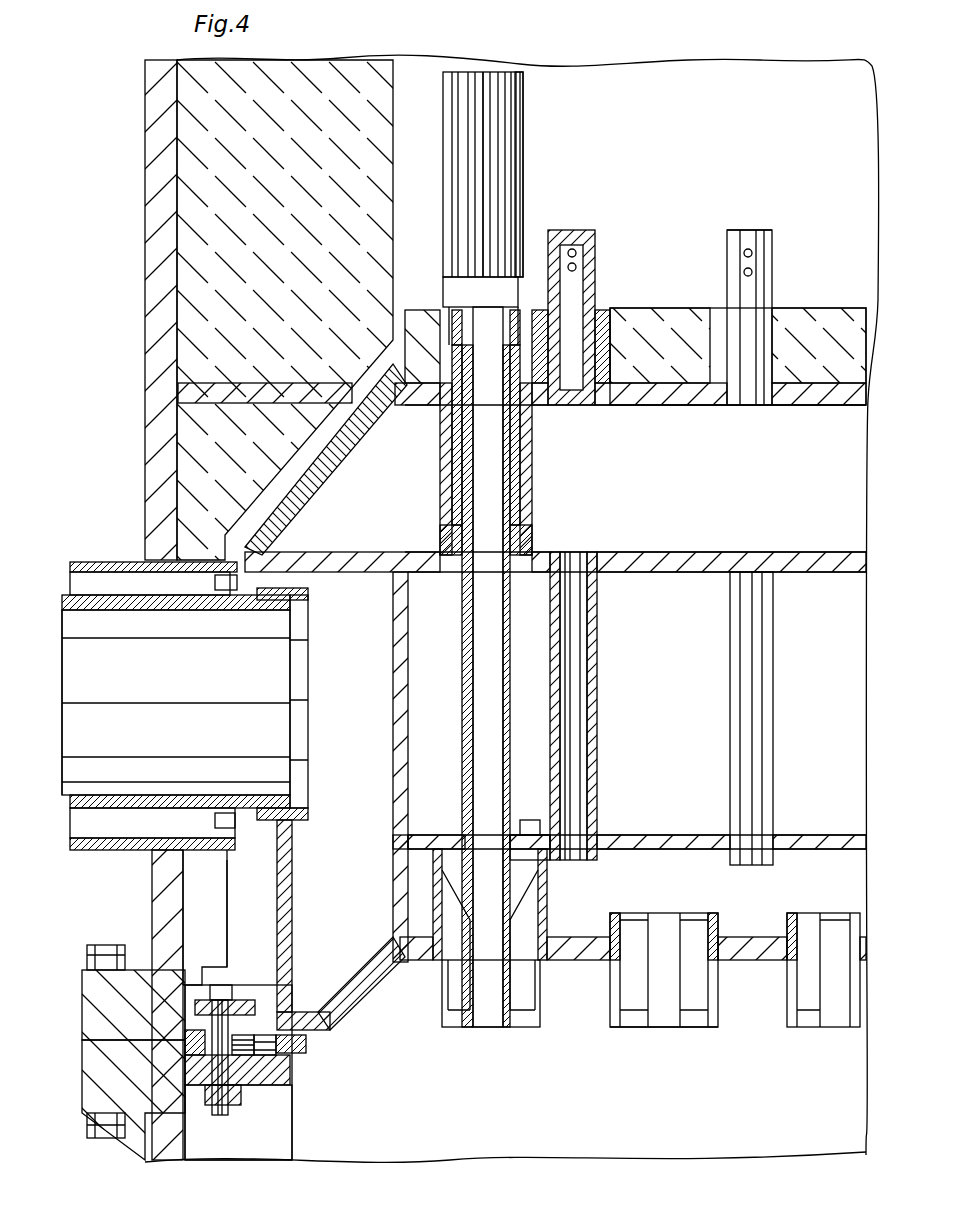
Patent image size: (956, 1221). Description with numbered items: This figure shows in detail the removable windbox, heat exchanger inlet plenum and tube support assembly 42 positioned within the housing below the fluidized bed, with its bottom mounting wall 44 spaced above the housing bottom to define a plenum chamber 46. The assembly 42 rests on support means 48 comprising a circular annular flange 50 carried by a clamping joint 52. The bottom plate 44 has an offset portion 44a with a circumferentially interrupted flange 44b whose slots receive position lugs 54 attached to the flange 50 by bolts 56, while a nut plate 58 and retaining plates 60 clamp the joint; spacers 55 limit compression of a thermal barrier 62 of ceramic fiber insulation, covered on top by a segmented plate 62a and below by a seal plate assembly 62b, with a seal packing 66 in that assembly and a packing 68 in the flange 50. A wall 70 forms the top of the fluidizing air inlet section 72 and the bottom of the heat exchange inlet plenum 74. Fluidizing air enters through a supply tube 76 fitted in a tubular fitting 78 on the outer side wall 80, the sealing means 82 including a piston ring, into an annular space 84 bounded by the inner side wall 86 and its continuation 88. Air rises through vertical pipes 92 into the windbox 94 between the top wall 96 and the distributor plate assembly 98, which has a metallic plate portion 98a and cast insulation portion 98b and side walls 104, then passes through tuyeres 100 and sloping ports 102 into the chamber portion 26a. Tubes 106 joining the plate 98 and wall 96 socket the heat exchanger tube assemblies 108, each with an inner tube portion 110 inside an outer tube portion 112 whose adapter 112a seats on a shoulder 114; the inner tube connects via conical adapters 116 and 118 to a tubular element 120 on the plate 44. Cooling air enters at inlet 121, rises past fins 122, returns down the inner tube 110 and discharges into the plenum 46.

The chamber portion 26a is at (746, 178).
The removable windbox, heat exchanger inlet plenum and heat exchanger tube support a 42 is at (270, 486).
The bottom mounting wall 44 is at (585, 958).
The offset portion 44a is at (368, 998).
The flange 44b is at (318, 1012).
The plenum chamber 46 is at (710, 1089).
The support means 48 is at (325, 900).
The circular annular flange 50 is at (223, 1120).
The clamping joint 52 is at (150, 1105).
The position lugs 54 is at (190, 1025).
The spacers 55 is at (200, 1042).
The fit screws or bolts 56 is at (232, 1000).
The nut plate 58 is at (226, 1105).
The retaining plates 60 is at (248, 1000).
The thermal barrier 62 is at (282, 1062).
The segmented plate 62a is at (300, 1043).
The seal plate assembly 62b is at (265, 1068).
The seal packing 66 is at (306, 1040).
The packing 68 is at (290, 1105).
The wall 70 is at (678, 845).
The fluidizing air inlet section 72 is at (700, 884).
The heat exchange inlet plenum 74 is at (668, 687).
The fluidizing air supply tube 76 is at (118, 605).
The tubular fitting 78 is at (300, 665).
The outer side wall 80 is at (290, 860).
The sealing means 82 is at (285, 630).
The annular space 84 is at (354, 730).
The inner side wall 86 is at (402, 712).
The continuation 88 is at (404, 848).
The vertical pipes or tubes 92 is at (737, 630).
The windbox 94 is at (716, 472).
The top wall 96 is at (740, 560).
The distributor plate assembly 98 is at (838, 390).
The bottom metallic plate portion 98a is at (652, 402).
The cast insulation portion 98b is at (848, 316).
The tuyeres or nozzles 100 is at (727, 298).
The downwardly sloping ports or passages 102 is at (592, 272).
The side walls 104 is at (346, 486).
The tubes 106 is at (528, 462).
The heat exchanger tube assemblies 108 is at (540, 180).
The inner tube portion 110 is at (515, 662).
The outer tube portion 112 is at (522, 146).
The adapter 112a is at (450, 455).
The shoulder 114 is at (538, 560).
The conical adapter 116 is at (520, 845).
The conical adapter 118 is at (520, 902).
The tubular element 120 is at (548, 885).
The air cooling fluid inlet 121 is at (458, 578).
The fins 122 is at (490, 230).